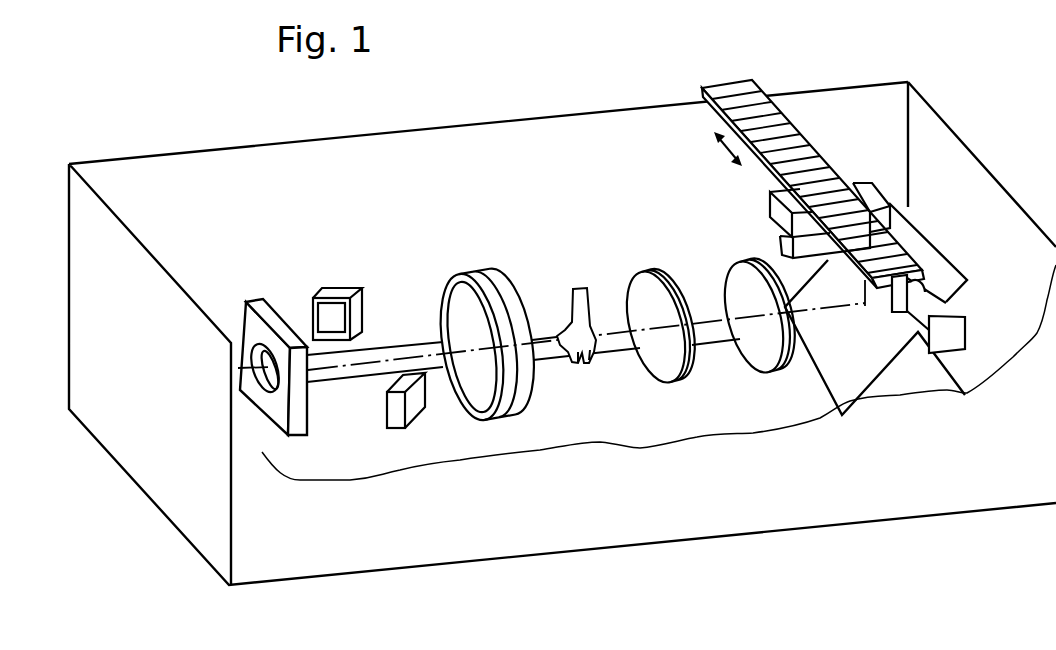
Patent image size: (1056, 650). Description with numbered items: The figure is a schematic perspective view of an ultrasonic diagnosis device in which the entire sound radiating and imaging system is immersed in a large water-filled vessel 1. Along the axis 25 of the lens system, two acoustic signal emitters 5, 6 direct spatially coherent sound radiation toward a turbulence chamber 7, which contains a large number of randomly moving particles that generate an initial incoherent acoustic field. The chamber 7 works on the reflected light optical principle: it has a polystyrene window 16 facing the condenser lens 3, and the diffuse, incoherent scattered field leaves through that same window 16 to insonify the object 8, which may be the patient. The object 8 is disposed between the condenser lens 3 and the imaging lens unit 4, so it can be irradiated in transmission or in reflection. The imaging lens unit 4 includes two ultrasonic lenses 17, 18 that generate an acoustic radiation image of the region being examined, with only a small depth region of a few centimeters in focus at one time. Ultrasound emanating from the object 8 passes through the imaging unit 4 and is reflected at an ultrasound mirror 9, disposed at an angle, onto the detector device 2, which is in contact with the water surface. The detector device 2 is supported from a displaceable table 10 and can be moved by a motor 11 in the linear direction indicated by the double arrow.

The vessel 1 is at (152, 172).
The detector device 2 is at (783, 237).
The condenser lens 3 is at (523, 403).
The imaging lens unit 4 is at (713, 440).
The acoustic signal emitter 5 is at (340, 293).
The acoustic signal emitter 6 is at (412, 413).
The turbulence chamber 7 is at (292, 377).
The object 8 is at (580, 322).
The ultrasound mirror 9 is at (857, 378).
The displaceable table 10 is at (783, 125).
The motor 11 is at (932, 307).
The polystyrene window 16 is at (274, 388).
The ultrasonic lens 17 is at (672, 372).
The ultrasonic lens 18 is at (767, 367).
The axis 25 is at (395, 347).